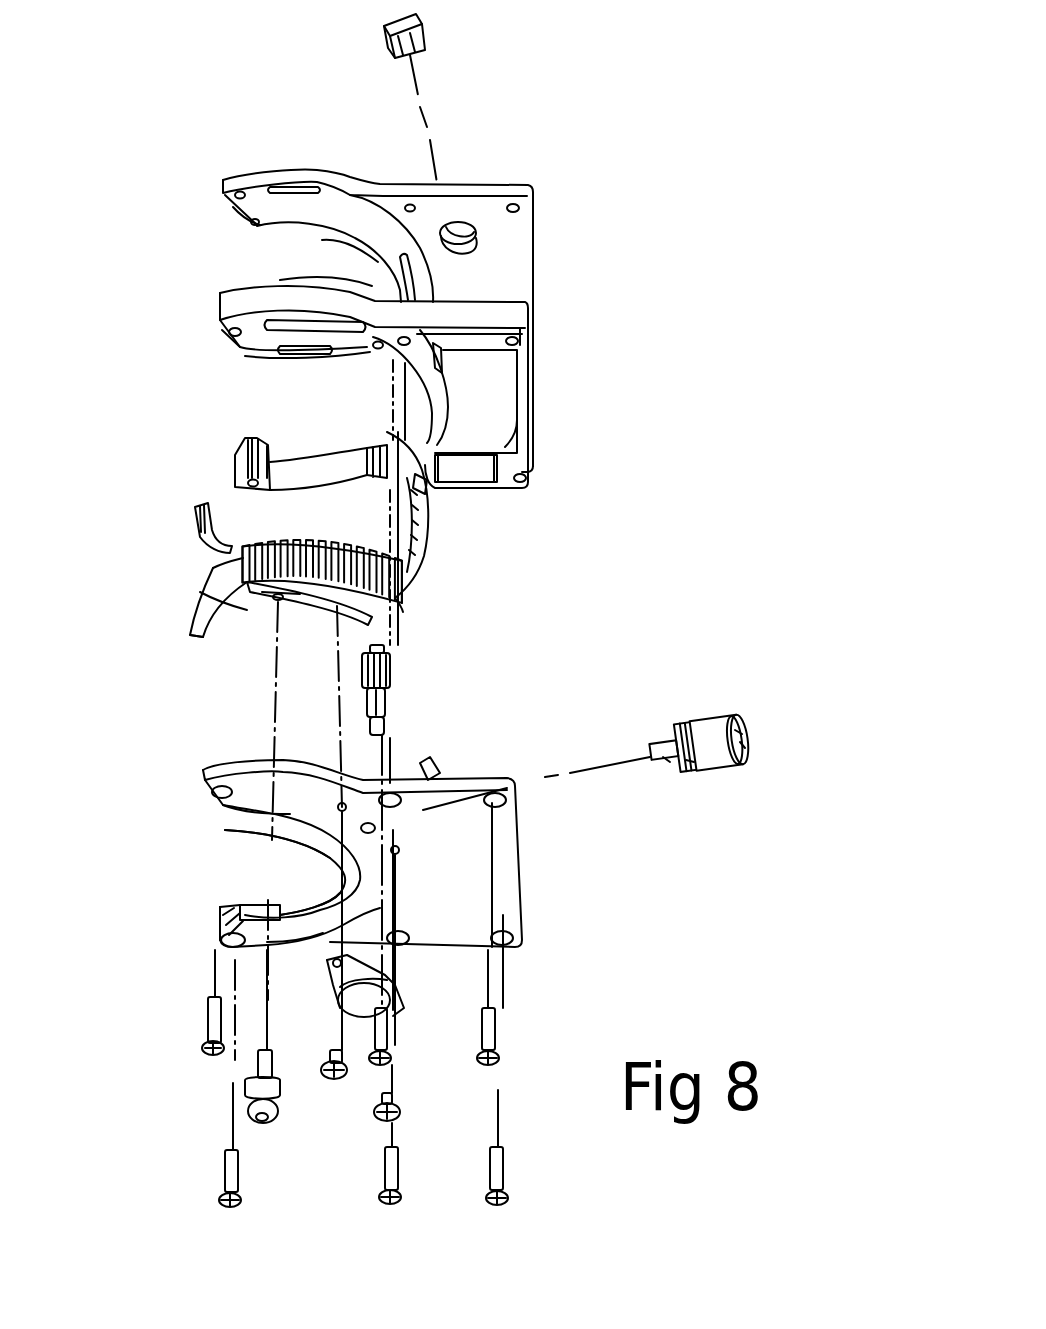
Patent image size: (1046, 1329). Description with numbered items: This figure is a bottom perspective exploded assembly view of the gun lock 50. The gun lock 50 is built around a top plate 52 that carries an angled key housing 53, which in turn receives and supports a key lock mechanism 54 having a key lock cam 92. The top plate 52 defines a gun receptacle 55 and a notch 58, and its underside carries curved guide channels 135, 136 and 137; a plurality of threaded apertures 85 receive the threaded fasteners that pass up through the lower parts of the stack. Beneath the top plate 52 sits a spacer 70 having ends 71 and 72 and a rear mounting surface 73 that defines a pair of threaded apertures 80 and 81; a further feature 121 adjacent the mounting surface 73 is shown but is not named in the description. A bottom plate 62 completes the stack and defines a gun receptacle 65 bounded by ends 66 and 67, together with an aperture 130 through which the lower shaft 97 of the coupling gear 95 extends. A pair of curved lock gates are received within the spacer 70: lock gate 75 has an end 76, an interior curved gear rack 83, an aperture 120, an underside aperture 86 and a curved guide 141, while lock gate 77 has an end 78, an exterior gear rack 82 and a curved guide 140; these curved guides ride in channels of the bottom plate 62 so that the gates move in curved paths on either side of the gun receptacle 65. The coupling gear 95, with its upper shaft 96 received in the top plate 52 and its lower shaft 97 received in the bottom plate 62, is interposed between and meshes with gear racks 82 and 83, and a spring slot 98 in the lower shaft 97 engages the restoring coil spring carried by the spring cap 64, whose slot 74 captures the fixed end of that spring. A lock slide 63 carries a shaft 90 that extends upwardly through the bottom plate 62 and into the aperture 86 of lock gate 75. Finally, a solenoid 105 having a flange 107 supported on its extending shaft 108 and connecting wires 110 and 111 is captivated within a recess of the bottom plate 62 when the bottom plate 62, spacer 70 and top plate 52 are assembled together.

The gun lock 50 is at (273, 77).
The top plate 52 is at (497, 185).
The angled key housing 53 is at (340, 862).
The key lock mechanism 54 is at (423, 42).
The gun receptacle 55 is at (322, 240).
The notch 58 is at (280, 280).
The bottom plate 62 is at (517, 880).
The lock slide 63 is at (272, 1122).
The spring cap 64 is at (400, 1008).
The gun receptacle 65 is at (262, 852).
The end 66 is at (220, 907).
The end 67 is at (240, 815).
The spacer 70 is at (500, 305).
The end 71 is at (233, 448).
The end 72 is at (225, 350).
The rear mounting surface 73 is at (538, 427).
The slot 74 is at (405, 983).
The lock gate 75 is at (410, 588).
The end 76 is at (250, 556).
The lock gate 77 is at (212, 570).
The end 78 is at (197, 637).
The threaded aperture 80 is at (538, 450).
The threaded aperture 81 is at (540, 340).
The exterior gear rack 82 is at (262, 540).
The interior gear rack 83 is at (417, 530).
The threaded apertures 85 is at (515, 209).
The aperture 86 is at (265, 606).
The shaft 90 is at (258, 1062).
The key lock cam 92 is at (443, 765).
The coupling gear 95 is at (392, 673).
The upper shaft 96 is at (390, 652).
The lower shaft 97 is at (392, 707).
The spring slot 98 is at (385, 722).
The solenoid 105 is at (703, 713).
The flange 107 is at (690, 760).
The shaft 108 is at (667, 760).
The connecting wire 110 is at (737, 734).
The connecting wire 111 is at (742, 745).
The aperture 120 is at (432, 495).
The slot 121 is at (443, 362).
The aperture 130 is at (377, 828).
The curved guide channel 135 is at (300, 352).
The curved guide channel 136 is at (268, 227).
The curved guide channel 137 is at (300, 193).
The curved guide 140 is at (327, 606).
The curved guide 141 is at (403, 597).